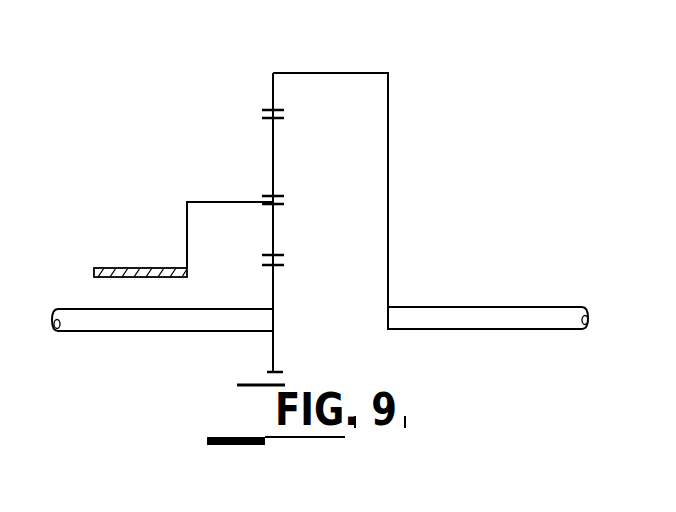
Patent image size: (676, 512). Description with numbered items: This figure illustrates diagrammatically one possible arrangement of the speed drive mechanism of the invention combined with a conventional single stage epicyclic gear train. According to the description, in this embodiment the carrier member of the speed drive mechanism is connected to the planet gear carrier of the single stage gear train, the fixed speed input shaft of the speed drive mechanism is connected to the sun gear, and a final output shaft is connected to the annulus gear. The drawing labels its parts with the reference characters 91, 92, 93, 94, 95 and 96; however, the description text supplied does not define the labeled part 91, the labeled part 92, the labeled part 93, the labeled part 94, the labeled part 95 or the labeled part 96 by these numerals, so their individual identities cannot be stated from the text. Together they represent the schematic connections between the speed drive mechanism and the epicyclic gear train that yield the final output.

The capacitor 91 is at (273, 85).
The conductive plate 92 is at (128, 266).
The rod 93 is at (110, 325).
The conductor 94 is at (273, 150).
The ground connection 95 is at (273, 350).
The rod 96 is at (525, 307).